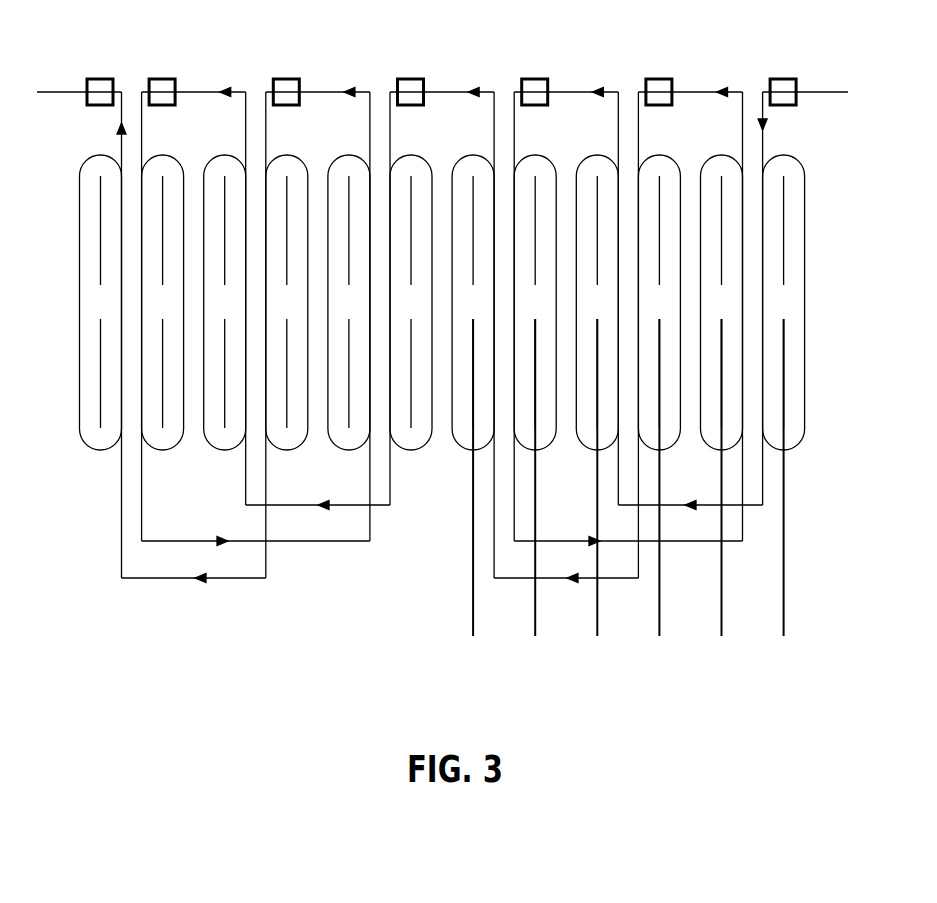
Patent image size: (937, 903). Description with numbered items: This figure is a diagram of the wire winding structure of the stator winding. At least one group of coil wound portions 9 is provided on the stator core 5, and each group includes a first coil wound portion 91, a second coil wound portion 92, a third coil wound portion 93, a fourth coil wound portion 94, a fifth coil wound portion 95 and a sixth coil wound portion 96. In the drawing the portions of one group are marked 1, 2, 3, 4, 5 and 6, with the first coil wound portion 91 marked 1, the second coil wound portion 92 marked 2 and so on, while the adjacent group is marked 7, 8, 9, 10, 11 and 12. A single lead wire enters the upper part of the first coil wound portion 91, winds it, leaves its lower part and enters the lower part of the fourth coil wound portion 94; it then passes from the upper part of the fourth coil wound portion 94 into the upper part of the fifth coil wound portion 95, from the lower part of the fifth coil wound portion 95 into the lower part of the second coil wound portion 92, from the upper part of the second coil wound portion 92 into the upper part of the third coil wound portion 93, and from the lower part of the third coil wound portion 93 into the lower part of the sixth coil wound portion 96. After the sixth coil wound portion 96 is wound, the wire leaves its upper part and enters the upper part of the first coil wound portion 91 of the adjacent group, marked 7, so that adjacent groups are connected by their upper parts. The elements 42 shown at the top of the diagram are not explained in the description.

The valve 42 is at (101, 80).
The first coil wound portion 91 is at (781, 497).
The second coil wound portion 92 is at (720, 494).
The third coil wound portion 93 is at (658, 497).
The fourth coil wound portion 94 is at (597, 496).
The fifth coil wound portion 95 is at (536, 498).
The sixth coil wound portion 96 is at (476, 494).
The first coil wound portion marking 1 is at (784, 302).
The second coil wound portion marking 2 is at (722, 302).
The third coil wound portion marking 3 is at (659, 302).
The fourth coil wound portion marking 4 is at (597, 302).
The stator core 5 is at (535, 302).
The sixth coil wound portion marking 6 is at (473, 302).
The first coil wound portion marking of adjacent group 7 is at (411, 302).
The adsorption tower 8 is at (349, 302).
The coil wound portion 9 is at (287, 302).
The adsorption tower 10 is at (225, 302).
The adsorption tower 11 is at (163, 302).
The adsorption tower 12 is at (101, 302).